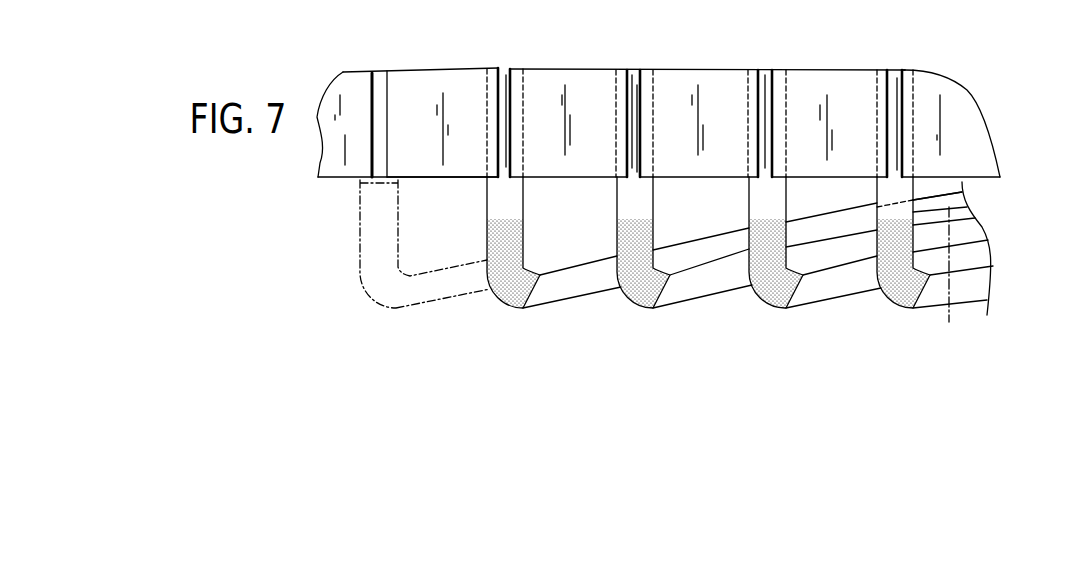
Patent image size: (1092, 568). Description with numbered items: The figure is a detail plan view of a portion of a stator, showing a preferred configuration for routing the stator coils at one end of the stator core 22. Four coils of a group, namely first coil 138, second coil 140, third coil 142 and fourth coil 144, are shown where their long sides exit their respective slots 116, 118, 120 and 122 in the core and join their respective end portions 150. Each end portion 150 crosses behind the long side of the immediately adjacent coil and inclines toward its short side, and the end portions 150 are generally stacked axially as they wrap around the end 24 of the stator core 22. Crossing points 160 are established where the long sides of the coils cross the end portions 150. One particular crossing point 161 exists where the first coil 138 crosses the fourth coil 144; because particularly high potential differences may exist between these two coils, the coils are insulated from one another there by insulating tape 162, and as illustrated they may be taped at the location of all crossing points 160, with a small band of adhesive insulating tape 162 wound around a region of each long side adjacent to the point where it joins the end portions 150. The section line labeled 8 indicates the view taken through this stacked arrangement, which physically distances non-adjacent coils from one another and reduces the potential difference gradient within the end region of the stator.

The stator core 22 is at (343, 178).
The end of stator core 24 is at (465, 180).
The slot 116 is at (505, 72).
The slot 118 is at (632, 73).
The slot 120 is at (765, 73).
The slot 122 is at (897, 76).
The first coil 138 is at (527, 309).
The second coil 140 is at (660, 310).
The third coil 142 is at (793, 309).
The fourth coil 144 is at (918, 310).
The end portion 150 is at (583, 280).
The crossing point 160 is at (623, 296).
The crossing point 161 is at (965, 204).
The insulating tape 162 is at (497, 268).
The section line 8- 8 is at (925, 345).